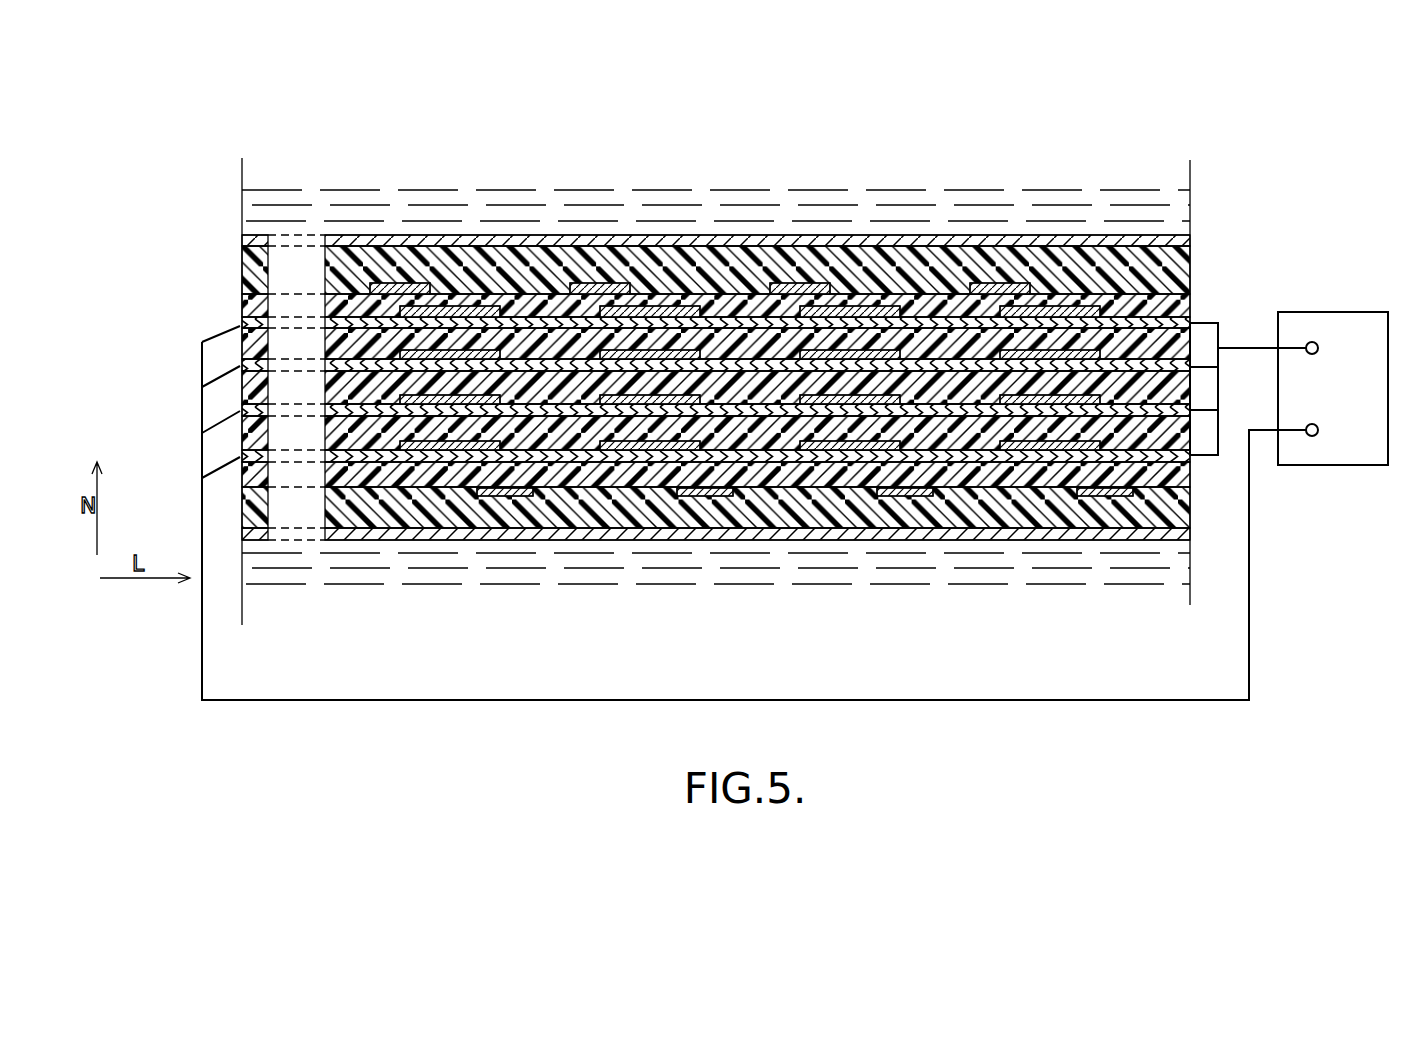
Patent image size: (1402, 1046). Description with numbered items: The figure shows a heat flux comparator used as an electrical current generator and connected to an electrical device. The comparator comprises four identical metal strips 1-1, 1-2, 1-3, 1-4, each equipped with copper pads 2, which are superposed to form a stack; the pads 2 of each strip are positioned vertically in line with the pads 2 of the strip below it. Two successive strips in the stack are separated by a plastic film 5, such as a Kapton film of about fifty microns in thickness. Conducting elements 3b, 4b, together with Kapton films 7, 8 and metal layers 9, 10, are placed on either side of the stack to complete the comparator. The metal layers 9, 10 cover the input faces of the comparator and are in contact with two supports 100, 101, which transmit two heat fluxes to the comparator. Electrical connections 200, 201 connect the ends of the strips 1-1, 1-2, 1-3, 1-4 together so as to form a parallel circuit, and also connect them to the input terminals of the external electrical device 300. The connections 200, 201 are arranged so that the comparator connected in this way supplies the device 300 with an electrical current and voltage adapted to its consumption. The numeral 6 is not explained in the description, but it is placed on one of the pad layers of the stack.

The metal strip 1-1 is at (337, 322).
The metal strip 1-2 is at (340, 362).
The metal strip 1-3 is at (340, 407).
The metal strip 1-4 is at (340, 455).
The copper pad 2 is at (337, 315).
The conducting element 3b is at (520, 497).
The conducting element 4b is at (605, 284).
The plastic film 5 is at (1140, 347).
The intermediate electrode pad 6 is at (441, 303).
The Kapton film 7 is at (437, 527).
The Kapton film 8 is at (822, 283).
The metal layer 9 is at (765, 535).
The metal layer 10 is at (525, 236).
The support 100 is at (978, 218).
The support 101 is at (953, 575).
The electrical connection 200 is at (1249, 572).
The electrical connection 201 is at (1250, 343).
The external electrical device 300 is at (1342, 445).